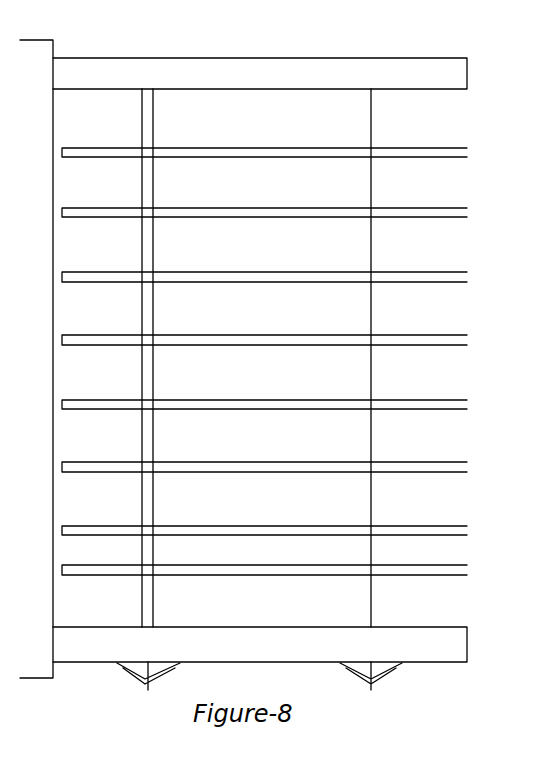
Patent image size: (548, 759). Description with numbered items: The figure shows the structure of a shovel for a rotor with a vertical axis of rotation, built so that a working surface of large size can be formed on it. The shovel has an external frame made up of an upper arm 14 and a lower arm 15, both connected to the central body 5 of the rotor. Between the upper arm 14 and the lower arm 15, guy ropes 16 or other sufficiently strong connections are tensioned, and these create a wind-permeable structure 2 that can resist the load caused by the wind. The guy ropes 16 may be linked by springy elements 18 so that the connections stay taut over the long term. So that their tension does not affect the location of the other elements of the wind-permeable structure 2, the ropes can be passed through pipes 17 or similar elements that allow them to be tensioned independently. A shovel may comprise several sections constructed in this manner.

The wind-permeable structure 2 is at (247, 148).
The central body 5 is at (35, 55).
The upper arm 14 is at (247, 73).
The lower arm 15 is at (253, 645).
The guy ropes 16 is at (372, 119).
The pipes 17 is at (142, 118).
The springy elements 18 is at (430, 678).